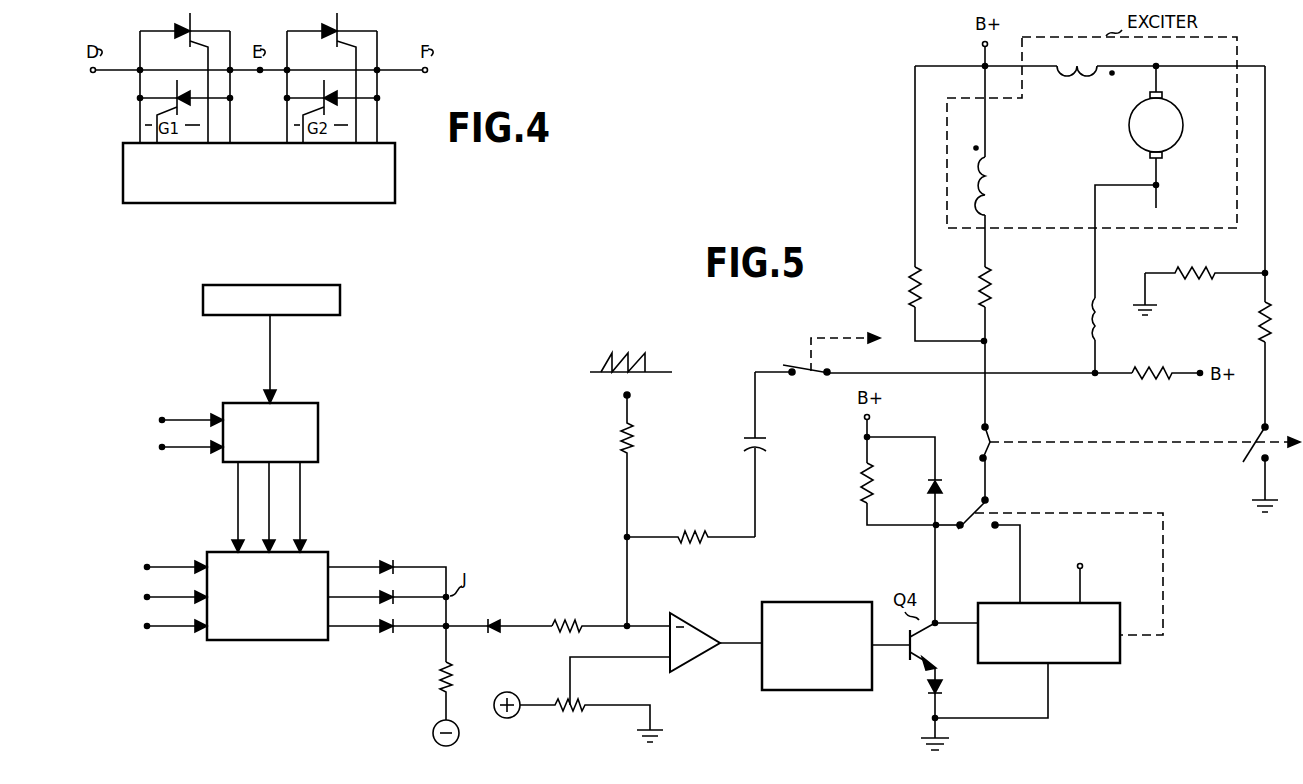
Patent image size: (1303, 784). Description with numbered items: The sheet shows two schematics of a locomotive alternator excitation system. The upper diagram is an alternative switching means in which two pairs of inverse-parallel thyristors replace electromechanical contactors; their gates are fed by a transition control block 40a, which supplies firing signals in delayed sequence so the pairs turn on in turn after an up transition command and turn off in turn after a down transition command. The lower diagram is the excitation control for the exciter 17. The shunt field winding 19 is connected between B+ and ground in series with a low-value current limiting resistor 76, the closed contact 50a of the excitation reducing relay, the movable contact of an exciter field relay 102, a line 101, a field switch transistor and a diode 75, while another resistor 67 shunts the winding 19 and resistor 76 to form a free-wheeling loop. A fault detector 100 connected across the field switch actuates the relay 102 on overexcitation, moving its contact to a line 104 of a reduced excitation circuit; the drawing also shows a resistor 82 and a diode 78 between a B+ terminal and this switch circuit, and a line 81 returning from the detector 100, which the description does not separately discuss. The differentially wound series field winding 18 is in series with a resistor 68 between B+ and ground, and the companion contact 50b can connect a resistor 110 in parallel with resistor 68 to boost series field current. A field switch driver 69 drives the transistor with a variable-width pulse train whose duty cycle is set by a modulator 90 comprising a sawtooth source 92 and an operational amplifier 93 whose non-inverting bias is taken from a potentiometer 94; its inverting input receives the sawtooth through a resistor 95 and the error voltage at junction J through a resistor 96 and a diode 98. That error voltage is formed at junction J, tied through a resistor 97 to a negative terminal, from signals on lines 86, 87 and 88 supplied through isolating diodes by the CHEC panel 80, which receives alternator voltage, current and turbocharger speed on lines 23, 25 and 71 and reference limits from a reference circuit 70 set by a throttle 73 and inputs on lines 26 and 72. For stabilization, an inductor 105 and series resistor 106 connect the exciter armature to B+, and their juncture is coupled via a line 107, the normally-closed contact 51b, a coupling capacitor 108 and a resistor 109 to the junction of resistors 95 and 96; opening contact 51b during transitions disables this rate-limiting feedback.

In FIG. 4, the transition control block 40a is at (395, 176).
In FIG. 5, the exciter 17 is at (1184, 122).
In FIG. 5, the series field winding 18 is at (1080, 58).
In FIG. 5, the shunt field winding 19 is at (997, 154).
In FIG. 5, the input line 23 is at (172, 560).
In FIG. 5, the input line 25 is at (158, 591).
In FIG. 5, the input line 26 is at (177, 417).
In FIG. 5, the contact of excitation reducing relay 50a is at (992, 433).
In FIG. 5, the companion contact of excitation reducing relay 50b is at (1242, 469).
In FIG. 5, the normally-closed relay contact 51b is at (808, 380).
In FIG. 5, the resistor 67 is at (904, 290).
In FIG. 5, the resistor 68 is at (1197, 266).
In FIG. 5, the field switch driver block 69 is at (827, 598).
In FIG. 5, the reference signal circuit 70 is at (319, 406).
In FIG. 5, the input line 71 is at (160, 635).
In FIG. 5, the input line 72 is at (178, 453).
In FIG. 5, the locomotive throttle 73 is at (341, 305).
In FIG. 5, the diode 75 is at (946, 690).
In FIG. 5, the current limiting resistor 76 is at (998, 292).
In FIG. 5, the diode 78 is at (926, 484).
In FIG. 5, the constant horsepower excitation control panel 80 is at (268, 641).
In FIG. 5, the fault detector sense line 81 is at (1043, 686).
In FIG. 5, the resistor 82 is at (856, 482).
In FIG. 5, the line 86 is at (376, 561).
In FIG. 5, the line 87 is at (372, 598).
In FIG. 5, the line 88 is at (356, 632).
In FIG. 5, the modulator 90 is at (552, 573).
In FIG. 5, the sawtooth waveform source 92 is at (620, 396).
In FIG. 5, the operational amplifier 93 is at (713, 621).
In FIG. 5, the potentiometer 94 is at (572, 716).
In FIG. 5, the resistor 95 is at (616, 448).
In FIG. 5, the resistor 96 is at (583, 615).
In FIG. 5, the resistor 97 is at (430, 680).
In FIG. 5, the diode 98 is at (500, 639).
In FIG. 5, the fault detector 100 is at (1104, 666).
In FIG. 5, the line 101 is at (950, 532).
In FIG. 5, the exciter field relay 102 is at (990, 506).
In FIG. 5, the line 104 is at (1017, 558).
In FIG. 5, the inductor 105 is at (1083, 320).
In FIG. 5, the series resistor 106 is at (1135, 385).
In FIG. 5, the line 107 is at (1050, 376).
In FIG. 5, the coupling capacitor 108 is at (740, 448).
In FIG. 5, the resistor 109 is at (698, 528).
In FIG. 5, the resistor 110 is at (1248, 320).